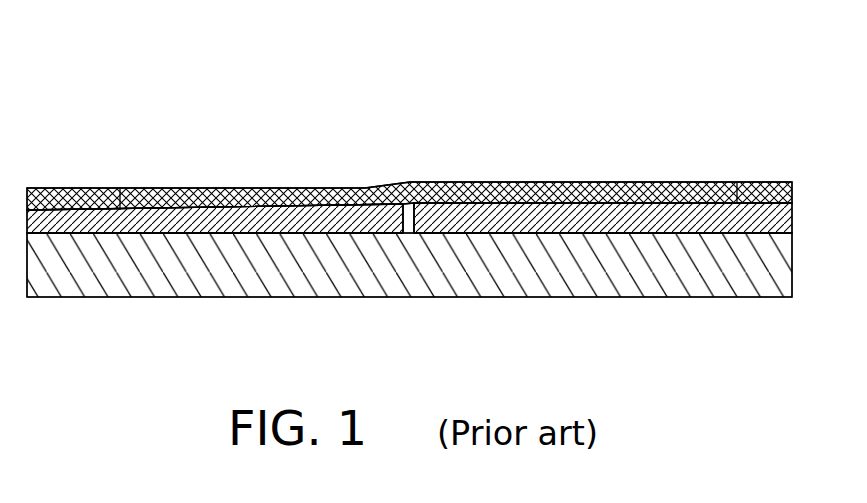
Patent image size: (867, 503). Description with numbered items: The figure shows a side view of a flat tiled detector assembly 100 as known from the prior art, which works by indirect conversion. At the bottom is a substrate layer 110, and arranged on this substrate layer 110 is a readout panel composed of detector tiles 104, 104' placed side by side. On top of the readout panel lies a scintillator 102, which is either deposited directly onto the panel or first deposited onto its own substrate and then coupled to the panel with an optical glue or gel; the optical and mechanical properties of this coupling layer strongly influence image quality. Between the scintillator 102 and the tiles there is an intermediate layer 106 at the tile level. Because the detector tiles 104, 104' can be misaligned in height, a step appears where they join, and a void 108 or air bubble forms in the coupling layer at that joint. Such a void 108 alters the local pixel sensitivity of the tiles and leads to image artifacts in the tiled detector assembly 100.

The tiled detector assembly 100 is at (623, 87).
The scintillator 102 is at (192, 188).
The detector tile 104 is at (112, 167).
The detector tile 104' is at (729, 164).
The intermediate hatched layer 106 is at (409, 218).
The void 108 is at (405, 200).
The substrate layer 110 is at (442, 298).